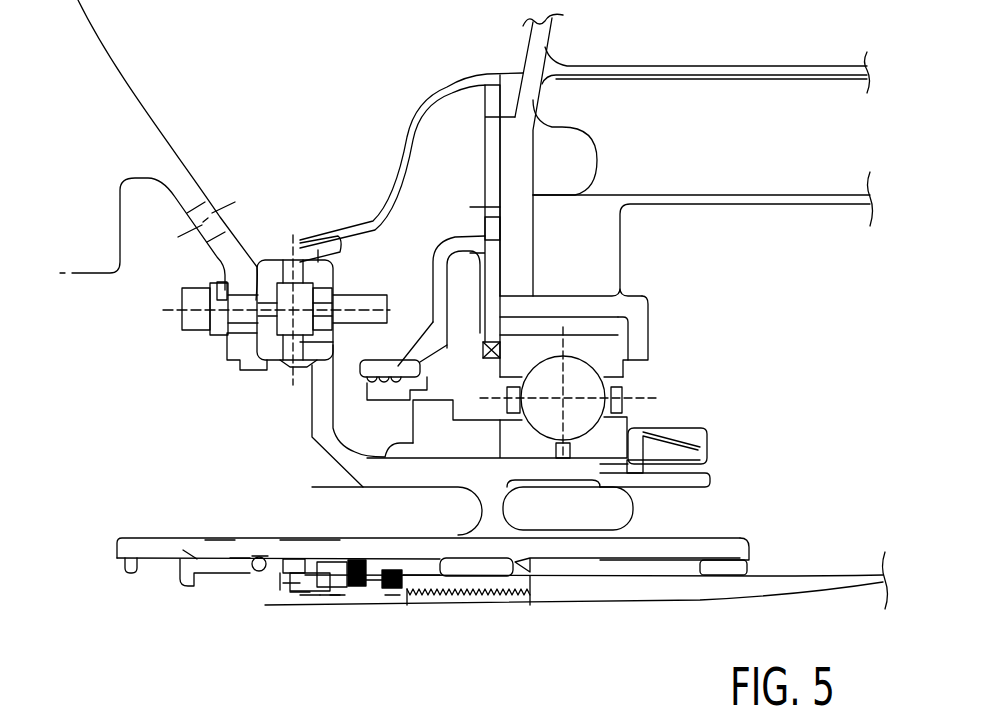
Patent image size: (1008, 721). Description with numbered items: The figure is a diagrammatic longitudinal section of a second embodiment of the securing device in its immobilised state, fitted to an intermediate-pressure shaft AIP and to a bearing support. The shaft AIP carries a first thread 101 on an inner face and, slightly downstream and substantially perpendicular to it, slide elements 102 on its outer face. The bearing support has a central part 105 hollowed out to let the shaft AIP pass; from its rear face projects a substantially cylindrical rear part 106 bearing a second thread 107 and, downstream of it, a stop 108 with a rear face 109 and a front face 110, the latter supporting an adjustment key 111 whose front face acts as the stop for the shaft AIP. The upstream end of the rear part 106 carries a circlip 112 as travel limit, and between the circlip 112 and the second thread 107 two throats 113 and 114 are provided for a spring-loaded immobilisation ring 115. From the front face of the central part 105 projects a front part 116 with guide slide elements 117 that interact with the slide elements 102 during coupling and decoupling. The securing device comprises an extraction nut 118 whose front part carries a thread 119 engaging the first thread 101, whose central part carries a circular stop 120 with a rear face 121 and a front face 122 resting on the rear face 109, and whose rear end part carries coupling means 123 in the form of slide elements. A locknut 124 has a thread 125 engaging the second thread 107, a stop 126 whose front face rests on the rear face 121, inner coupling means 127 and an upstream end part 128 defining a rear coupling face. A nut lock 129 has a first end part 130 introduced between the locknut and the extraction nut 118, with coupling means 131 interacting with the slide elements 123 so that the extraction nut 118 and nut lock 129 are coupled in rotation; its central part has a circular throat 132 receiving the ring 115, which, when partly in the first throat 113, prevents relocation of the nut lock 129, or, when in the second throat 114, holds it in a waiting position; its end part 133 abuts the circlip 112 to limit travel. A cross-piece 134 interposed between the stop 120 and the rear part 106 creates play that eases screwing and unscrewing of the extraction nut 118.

The first thread 101 is at (488, 603).
The slide elements 102 is at (635, 577).
The central part 105 is at (500, 503).
The rear part 106 is at (157, 550).
The second thread 107 is at (307, 560).
The stop 108 is at (367, 560).
The rear face 109 is at (353, 540).
The front face 110 is at (397, 568).
The adjustment key 111 is at (400, 595).
The circlip 112 is at (114, 562).
The first throat 113 is at (257, 556).
The second throat 114 is at (220, 558).
The spring-loaded immobilisation ring 115 is at (240, 559).
The front part 116 is at (723, 540).
The guide slide elements 117 is at (617, 553).
The extraction nut 118 is at (482, 598).
The thread 119 is at (447, 597).
The stop 120 is at (352, 598).
The rear face 121 is at (335, 600).
The front face 122 is at (390, 600).
The coupling means 123 is at (303, 595).
The locknut 124 is at (297, 558).
The thread 125 is at (297, 592).
The stop 126 is at (312, 490).
The coupling means 127 is at (283, 583).
The upstream end part 128 is at (278, 580).
The nut lock 129 is at (197, 559).
The first end part 130 is at (298, 590).
The coupling means 131 is at (305, 595).
The circular throat 132 is at (252, 567).
The end part 133 is at (180, 575).
The cross-piece 134 is at (346, 561).
The intermediate-pressure shaft AIP is at (830, 574).